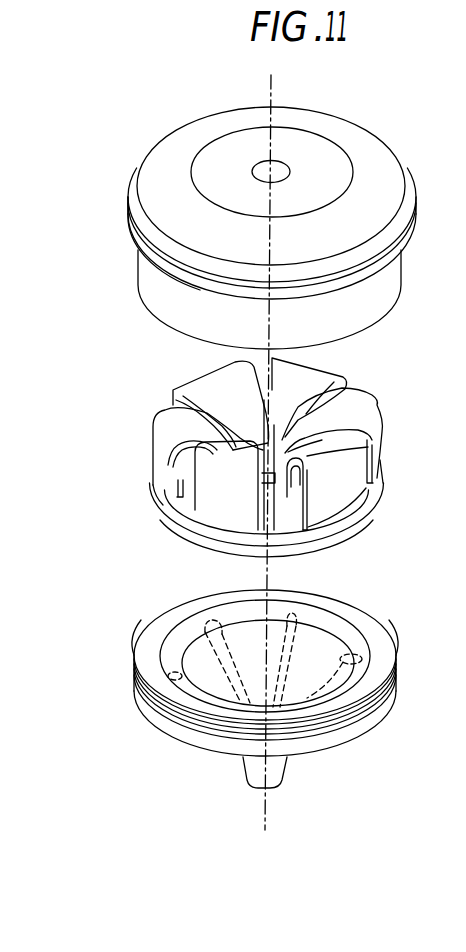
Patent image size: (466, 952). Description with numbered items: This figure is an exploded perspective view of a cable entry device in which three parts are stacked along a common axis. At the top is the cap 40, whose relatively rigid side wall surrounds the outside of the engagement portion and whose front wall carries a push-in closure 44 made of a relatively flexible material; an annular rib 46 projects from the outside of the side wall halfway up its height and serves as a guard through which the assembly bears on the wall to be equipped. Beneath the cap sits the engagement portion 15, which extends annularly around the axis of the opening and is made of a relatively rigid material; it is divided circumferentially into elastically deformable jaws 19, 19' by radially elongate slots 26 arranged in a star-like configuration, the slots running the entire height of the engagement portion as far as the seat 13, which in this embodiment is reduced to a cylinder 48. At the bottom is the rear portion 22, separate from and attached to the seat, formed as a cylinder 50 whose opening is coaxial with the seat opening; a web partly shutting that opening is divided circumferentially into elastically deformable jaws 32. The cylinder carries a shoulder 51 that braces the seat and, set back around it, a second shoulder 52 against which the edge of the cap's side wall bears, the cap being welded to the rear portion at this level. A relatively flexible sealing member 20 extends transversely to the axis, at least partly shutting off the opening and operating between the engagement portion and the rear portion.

The cap 40 is at (161, 135).
The closure 44 is at (318, 147).
The annular rib 46 is at (128, 212).
The engagement portion 15 is at (383, 413).
The jaw 19 is at (198, 395).
The jaw 19' is at (329, 388).
The slot 26 is at (172, 400).
The seat 13 is at (380, 514).
The cylinder 48 is at (200, 532).
The rear portion 22 is at (367, 732).
The cylinder 50 is at (327, 751).
The jaw 32 is at (207, 601).
The shoulder 51 is at (157, 648).
The shoulder 52 is at (395, 667).
The sealing member 20 is at (318, 658).